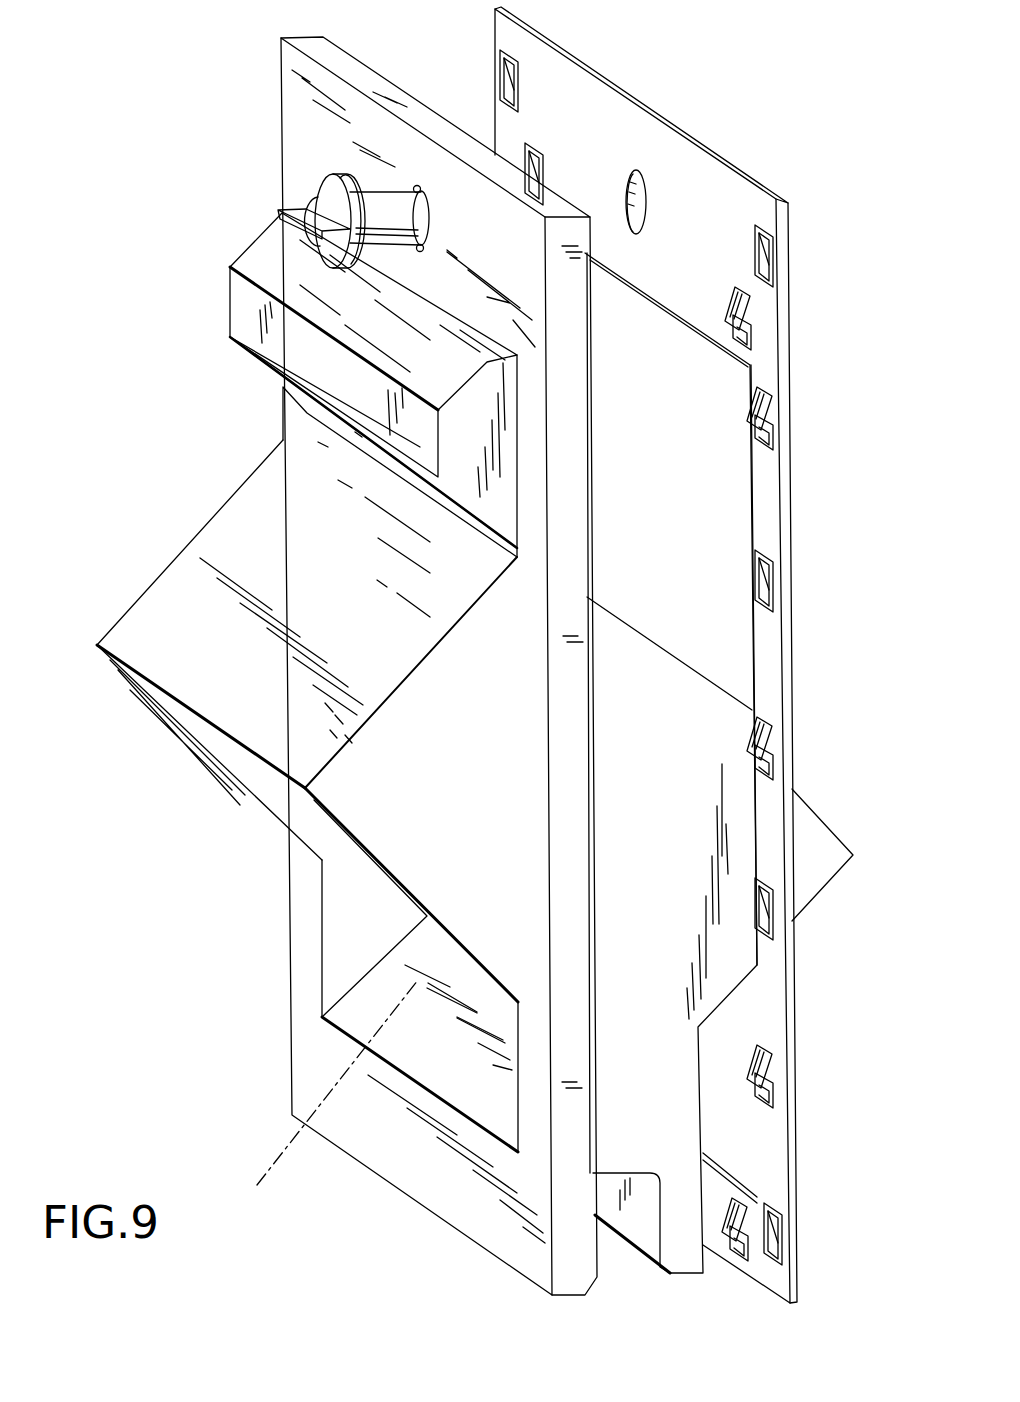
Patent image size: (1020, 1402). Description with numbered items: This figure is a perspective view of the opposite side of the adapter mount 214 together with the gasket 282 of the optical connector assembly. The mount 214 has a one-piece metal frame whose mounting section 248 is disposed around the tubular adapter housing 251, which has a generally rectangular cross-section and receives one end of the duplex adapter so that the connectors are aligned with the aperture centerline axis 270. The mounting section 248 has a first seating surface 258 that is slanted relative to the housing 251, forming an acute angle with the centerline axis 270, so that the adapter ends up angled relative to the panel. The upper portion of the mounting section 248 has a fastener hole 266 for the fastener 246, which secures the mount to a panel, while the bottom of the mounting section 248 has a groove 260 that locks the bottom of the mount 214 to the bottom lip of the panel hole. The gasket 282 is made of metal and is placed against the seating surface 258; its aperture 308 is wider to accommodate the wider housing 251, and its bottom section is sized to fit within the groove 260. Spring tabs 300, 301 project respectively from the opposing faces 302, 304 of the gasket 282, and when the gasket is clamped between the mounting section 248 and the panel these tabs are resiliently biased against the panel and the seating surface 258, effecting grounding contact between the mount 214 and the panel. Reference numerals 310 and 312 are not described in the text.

The mount 214 is at (238, 533).
The fastener 246 is at (320, 181).
The mounting section 248 is at (362, 78).
The adapter housing 251 is at (628, 813).
The first seating surface 258 is at (587, 533).
The groove 260 is at (620, 1250).
The fastener hole 266 is at (417, 190).
The aperture centerline axis 270 is at (282, 1157).
The gasket 282 is at (675, 180).
The spring tabs 300 is at (775, 240).
The spring tabs 301 is at (730, 318).
The face 302 is at (790, 340).
The face 304 is at (668, 265).
The aperture 308 is at (614, 360).
The rear panel 310 is at (560, 100).
The lower flange 312 is at (720, 1250).